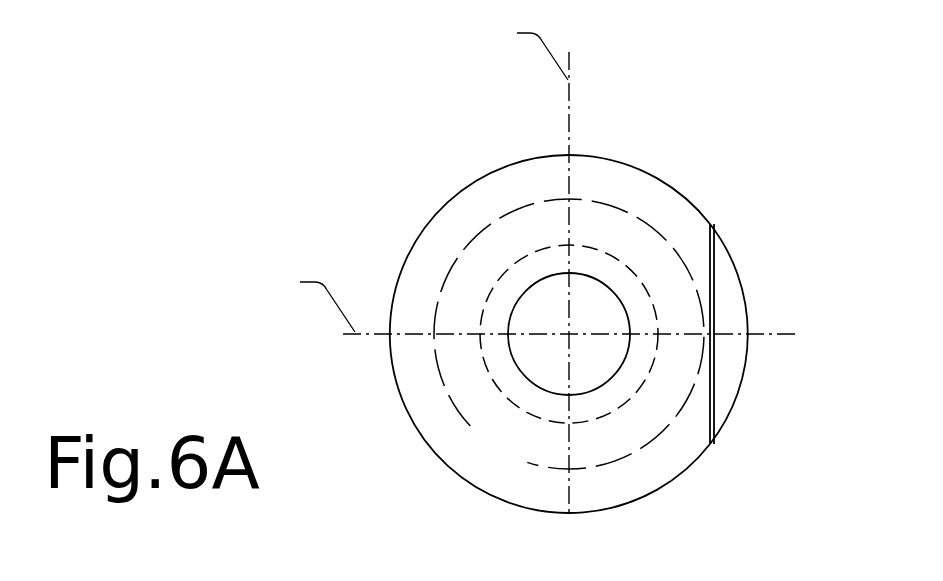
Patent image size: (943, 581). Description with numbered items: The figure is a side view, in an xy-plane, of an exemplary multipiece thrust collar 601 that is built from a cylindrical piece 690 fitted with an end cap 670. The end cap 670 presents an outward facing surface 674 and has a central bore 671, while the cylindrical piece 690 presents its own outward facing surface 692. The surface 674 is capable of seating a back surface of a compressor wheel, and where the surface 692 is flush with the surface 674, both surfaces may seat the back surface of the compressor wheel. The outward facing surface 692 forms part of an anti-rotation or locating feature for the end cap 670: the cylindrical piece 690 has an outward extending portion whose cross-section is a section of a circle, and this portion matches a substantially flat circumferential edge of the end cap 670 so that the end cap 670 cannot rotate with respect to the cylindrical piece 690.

The thrust collar 601 is at (749, 112).
The end cap 670 is at (435, 212).
The bore 671 is at (617, 360).
The outward facing surface 674 is at (520, 457).
The cylindrical piece 690 is at (737, 265).
The outward facing surface 692 is at (730, 368).